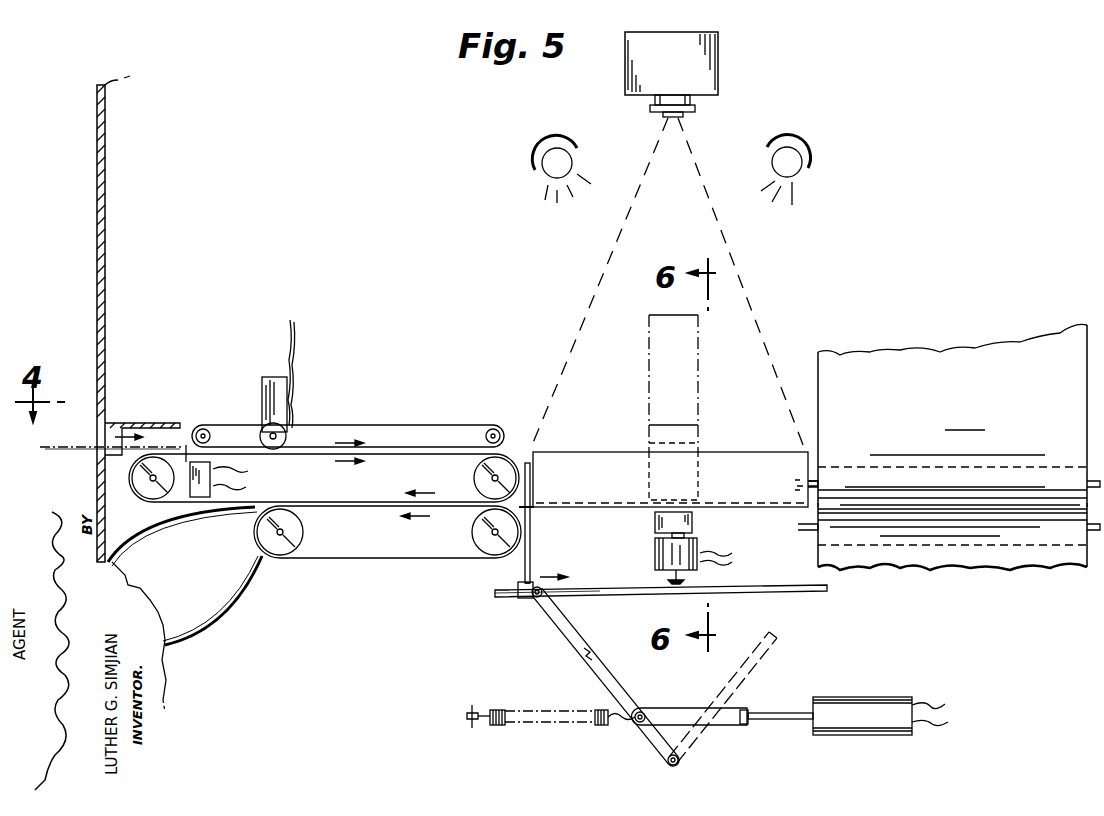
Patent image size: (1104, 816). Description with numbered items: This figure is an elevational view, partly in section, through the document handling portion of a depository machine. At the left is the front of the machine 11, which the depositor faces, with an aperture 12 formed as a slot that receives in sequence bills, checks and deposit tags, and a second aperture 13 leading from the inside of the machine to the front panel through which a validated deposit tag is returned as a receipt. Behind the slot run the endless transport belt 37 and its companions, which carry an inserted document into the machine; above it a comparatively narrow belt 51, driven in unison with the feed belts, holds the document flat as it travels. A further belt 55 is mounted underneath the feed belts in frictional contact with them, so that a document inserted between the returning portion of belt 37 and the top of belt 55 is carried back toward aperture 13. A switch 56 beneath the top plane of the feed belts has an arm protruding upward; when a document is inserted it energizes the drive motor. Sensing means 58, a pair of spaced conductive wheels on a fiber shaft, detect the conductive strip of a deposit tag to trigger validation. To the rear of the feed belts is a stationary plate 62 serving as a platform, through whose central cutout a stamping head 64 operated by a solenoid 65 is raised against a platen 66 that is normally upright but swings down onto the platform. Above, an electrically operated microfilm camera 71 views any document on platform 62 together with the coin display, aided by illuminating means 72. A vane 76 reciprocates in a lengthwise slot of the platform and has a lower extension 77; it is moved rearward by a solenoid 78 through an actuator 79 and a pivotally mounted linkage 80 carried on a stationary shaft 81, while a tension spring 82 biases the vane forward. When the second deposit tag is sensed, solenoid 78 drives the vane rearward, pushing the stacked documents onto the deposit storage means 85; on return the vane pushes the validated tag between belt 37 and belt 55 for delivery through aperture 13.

The front of the depository machine 11 is at (97, 275).
The aperture means 12 is at (103, 441).
The aperture 13 is at (185, 609).
The endless transport belt 37 is at (150, 503).
The belt 51 is at (382, 424).
The belt 55 is at (333, 507).
The switch 56 is at (213, 477).
The sensing means 58 is at (290, 412).
The stationary plate 62 is at (728, 506).
The stamping head 64 is at (694, 522).
The solenoid 65 is at (700, 548).
The platen 66 is at (700, 430).
The microfilm camera 71 is at (667, 241).
The illuminating means 72 is at (547, 178).
The vane 76 is at (531, 478).
The lower extension 77 is at (531, 548).
The solenoid 78 is at (880, 697).
The actuator 79 is at (665, 706).
The pivotally mounted linkage 80 is at (553, 618).
The stationary shaft 81 is at (795, 592).
The tension spring 82 is at (500, 710).
The deposit storage means 85 is at (925, 357).